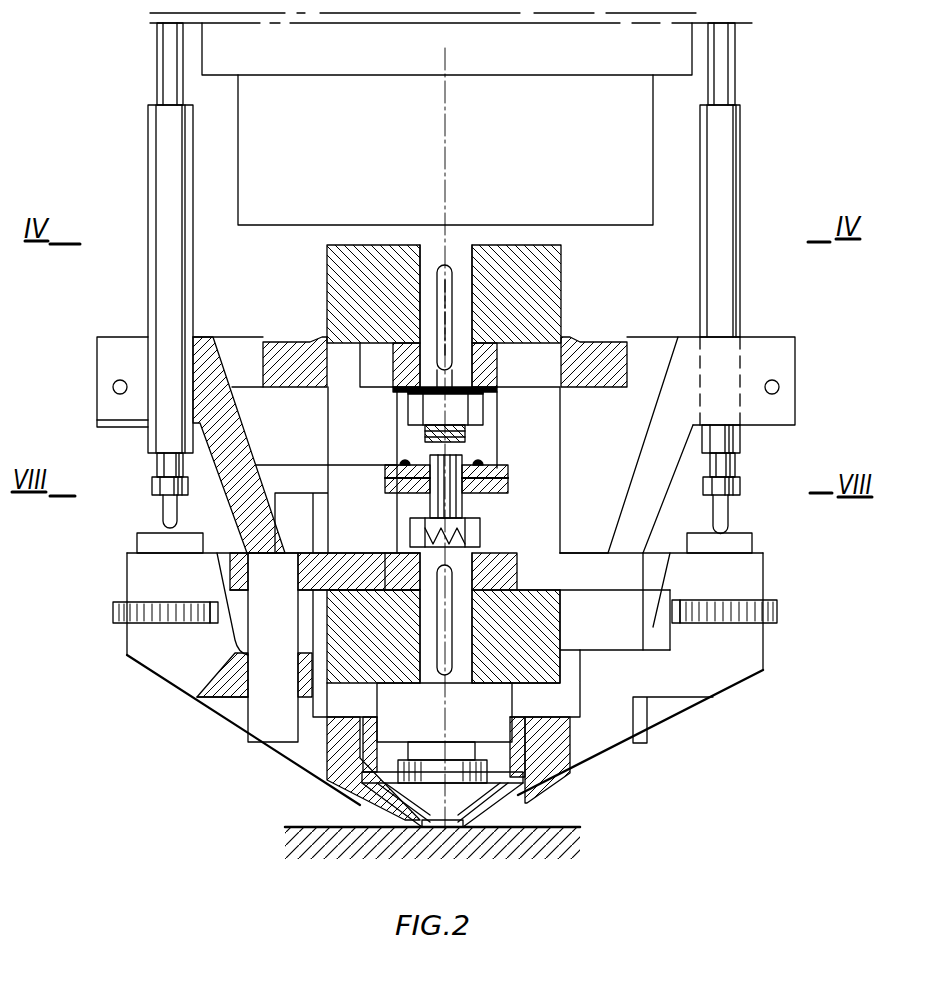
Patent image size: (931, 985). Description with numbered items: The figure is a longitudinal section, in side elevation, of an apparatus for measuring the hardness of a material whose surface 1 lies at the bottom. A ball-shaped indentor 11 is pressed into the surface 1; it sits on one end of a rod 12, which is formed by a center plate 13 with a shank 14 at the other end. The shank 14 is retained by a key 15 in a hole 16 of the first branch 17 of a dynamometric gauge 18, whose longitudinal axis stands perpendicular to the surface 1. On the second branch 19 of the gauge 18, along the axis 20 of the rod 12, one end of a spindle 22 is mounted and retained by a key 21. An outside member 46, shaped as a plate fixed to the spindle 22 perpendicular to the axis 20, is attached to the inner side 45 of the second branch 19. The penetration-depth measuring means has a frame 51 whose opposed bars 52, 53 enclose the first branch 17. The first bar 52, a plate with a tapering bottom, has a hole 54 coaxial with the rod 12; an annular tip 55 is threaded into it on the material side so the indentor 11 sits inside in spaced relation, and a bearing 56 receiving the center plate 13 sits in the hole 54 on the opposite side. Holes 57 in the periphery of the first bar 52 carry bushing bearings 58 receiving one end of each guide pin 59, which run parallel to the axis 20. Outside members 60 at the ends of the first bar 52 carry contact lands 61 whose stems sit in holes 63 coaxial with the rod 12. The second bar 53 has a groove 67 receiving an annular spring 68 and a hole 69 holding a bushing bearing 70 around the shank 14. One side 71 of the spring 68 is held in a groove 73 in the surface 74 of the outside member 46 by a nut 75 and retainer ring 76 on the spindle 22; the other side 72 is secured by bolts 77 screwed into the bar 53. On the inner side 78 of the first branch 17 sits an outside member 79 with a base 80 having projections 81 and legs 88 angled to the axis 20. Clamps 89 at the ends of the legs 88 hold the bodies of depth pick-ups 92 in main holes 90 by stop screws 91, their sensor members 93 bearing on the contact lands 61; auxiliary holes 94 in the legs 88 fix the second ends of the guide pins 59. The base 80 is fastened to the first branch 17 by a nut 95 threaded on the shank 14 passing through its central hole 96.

The surface of material 1 is at (558, 850).
The indentor 11 is at (430, 824).
The rod 12 is at (481, 624).
The center plate 13 is at (470, 815).
The shank 14 is at (463, 669).
The key 15 is at (440, 603).
The hole 16 is at (372, 690).
The first branch 17 is at (540, 612).
The dynamometric gauge 18 is at (562, 478).
The second branch 19 is at (540, 262).
The axis of the rod 20 is at (448, 711).
The key 21 is at (448, 262).
The spindle 22 is at (462, 262).
The inner side of the second branch 45 is at (380, 290).
The outside member 46 is at (612, 340).
The frame 51 is at (589, 773).
The first bar 52 is at (553, 760).
The second bar 53 is at (302, 473).
The hole 54 is at (325, 782).
The annular tip 55 is at (497, 732).
The bearing 56 is at (350, 803).
The holes 57 is at (210, 677).
The bearings 58 is at (237, 708).
The guide pins 59 is at (265, 737).
The outside members 60 is at (138, 637).
The contact lands 61 is at (145, 548).
The holes 63 is at (113, 612).
The groove 67 is at (560, 437).
The annular spring 68 is at (420, 436).
The hole 69 is at (507, 484).
The bearing 70 is at (463, 490).
The one side of the annular spring 71 is at (486, 350).
The other side of the annular spring 72 is at (400, 471).
The groove 73 is at (437, 262).
The surface of the outside member 74 is at (303, 383).
The nut 75 is at (418, 411).
The retainer ring 76 is at (408, 345).
The bolts 77 is at (478, 465).
The inner side of the first branch 78 is at (350, 553).
The outside member 79 is at (647, 567).
The base 80 is at (575, 574).
The projections 81 is at (663, 553).
The legs 88 is at (232, 428).
The clamps 89 is at (118, 340).
The main holes 90 is at (147, 411).
The stop screws 91 is at (113, 387).
The pick-ups 92 is at (155, 118).
The sensor members 93 is at (168, 514).
The auxiliary holes 94 is at (267, 574).
The nut 95 is at (414, 525).
The central hole 96 is at (496, 562).